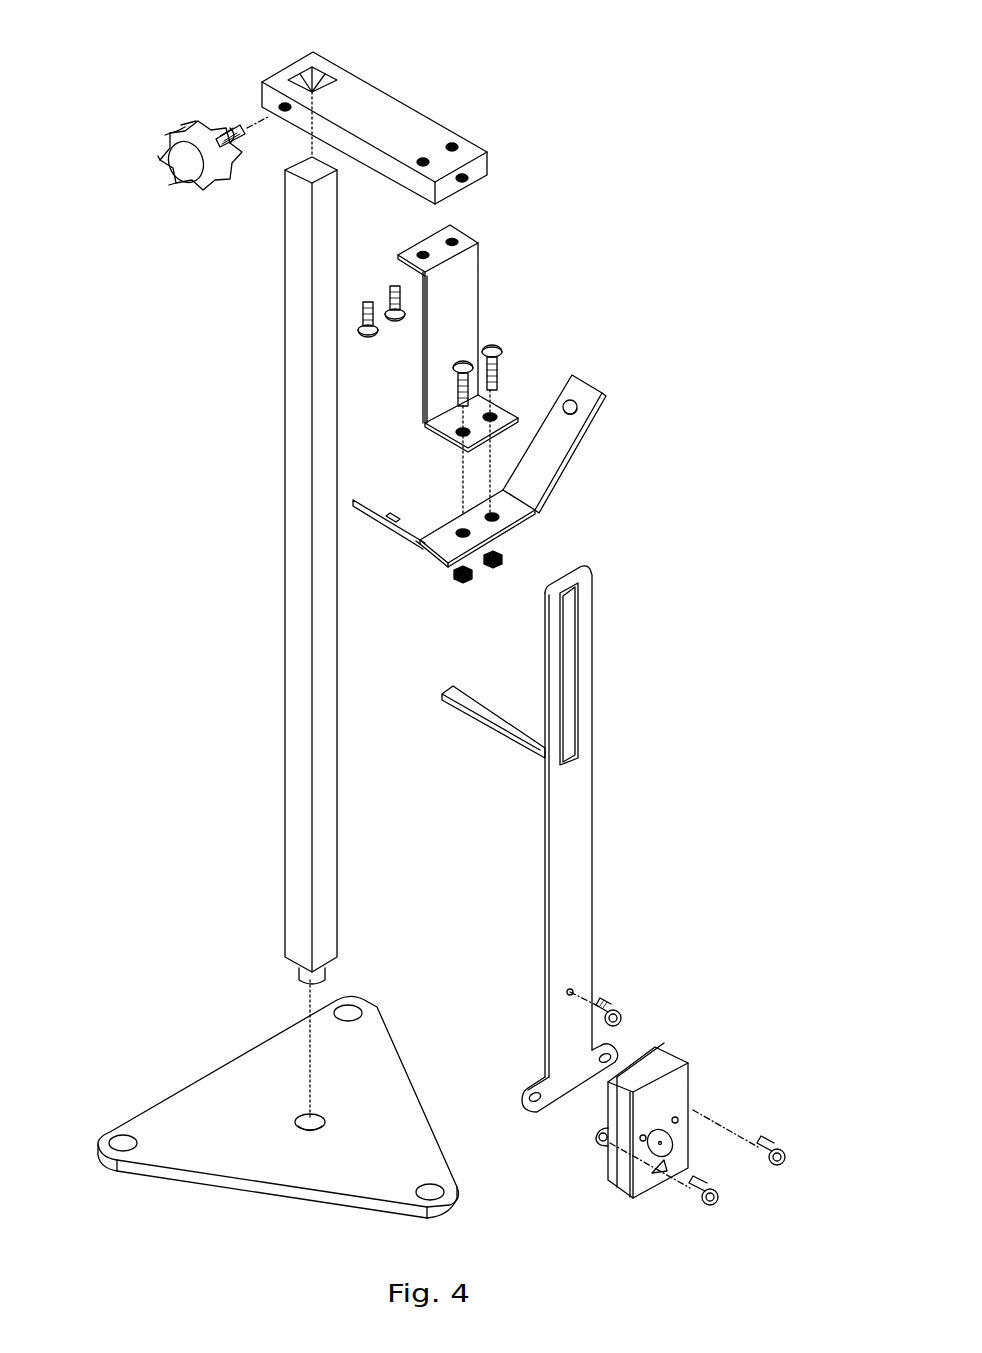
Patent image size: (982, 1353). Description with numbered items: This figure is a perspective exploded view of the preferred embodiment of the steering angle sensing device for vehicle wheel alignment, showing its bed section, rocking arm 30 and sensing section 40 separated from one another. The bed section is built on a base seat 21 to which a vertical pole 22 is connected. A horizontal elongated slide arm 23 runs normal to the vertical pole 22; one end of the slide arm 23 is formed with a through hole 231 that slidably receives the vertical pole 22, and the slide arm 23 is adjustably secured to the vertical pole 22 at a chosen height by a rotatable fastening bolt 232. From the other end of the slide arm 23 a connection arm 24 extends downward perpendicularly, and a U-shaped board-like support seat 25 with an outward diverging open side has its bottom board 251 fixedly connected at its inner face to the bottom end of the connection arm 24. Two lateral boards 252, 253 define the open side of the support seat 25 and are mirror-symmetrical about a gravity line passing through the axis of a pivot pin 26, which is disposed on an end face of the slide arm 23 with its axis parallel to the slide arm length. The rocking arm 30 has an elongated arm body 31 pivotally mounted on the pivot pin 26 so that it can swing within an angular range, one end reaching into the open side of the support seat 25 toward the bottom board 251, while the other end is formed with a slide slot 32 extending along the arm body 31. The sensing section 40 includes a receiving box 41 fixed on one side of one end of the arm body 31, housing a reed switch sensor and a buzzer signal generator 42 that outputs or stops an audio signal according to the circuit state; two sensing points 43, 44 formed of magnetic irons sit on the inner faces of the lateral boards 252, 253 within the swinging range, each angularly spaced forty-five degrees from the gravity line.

The base seat 21 is at (217, 1103).
The vertical pole 22 is at (298, 552).
The slide arm 23 is at (398, 100).
The through hole 231 is at (318, 78).
The fastening bolt 232 is at (185, 168).
The connection arm 24 is at (468, 305).
The support seat 25 is at (522, 475).
The bottom board 251 is at (515, 528).
The lateral board 252 is at (417, 543).
The lateral board 253 is at (573, 455).
The pivot pin 26 is at (623, 1015).
The rocking arm 30 is at (621, 839).
The arm body 31 is at (572, 870).
The slide slot 32 is at (582, 668).
The sensing section 40 is at (709, 1101).
The receiving box 41 is at (665, 1062).
The signal generator 42 is at (673, 1140).
The sensing point 43 is at (395, 517).
The sensing point 44 is at (573, 402).